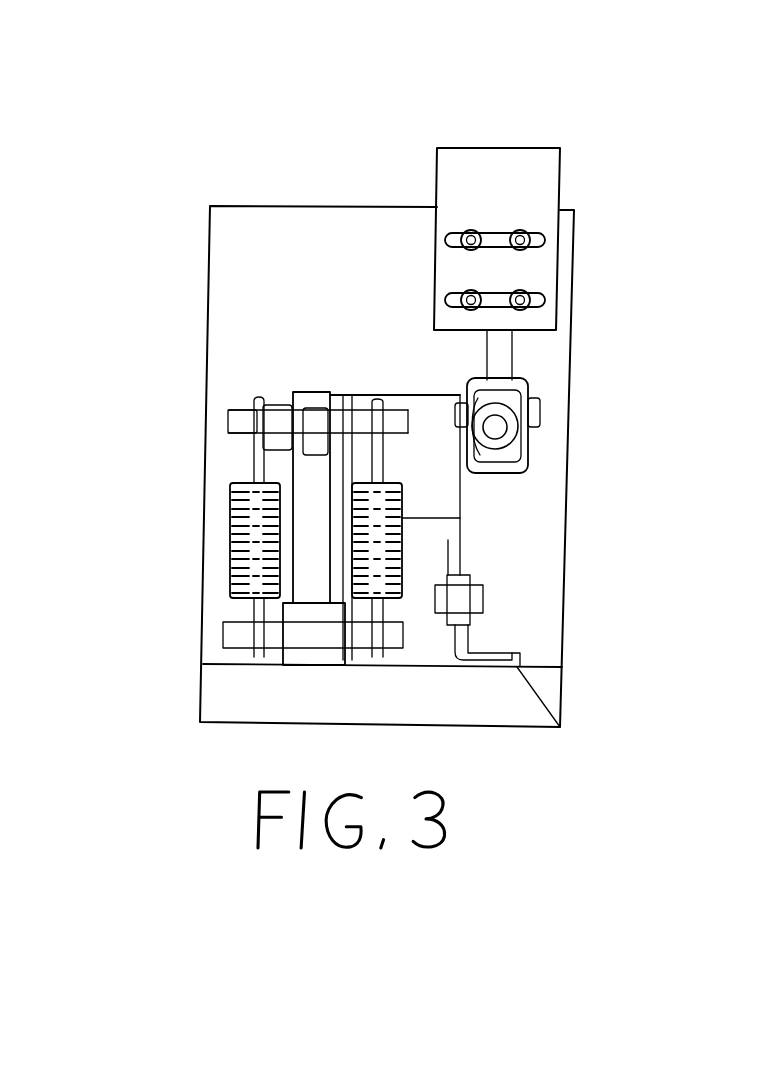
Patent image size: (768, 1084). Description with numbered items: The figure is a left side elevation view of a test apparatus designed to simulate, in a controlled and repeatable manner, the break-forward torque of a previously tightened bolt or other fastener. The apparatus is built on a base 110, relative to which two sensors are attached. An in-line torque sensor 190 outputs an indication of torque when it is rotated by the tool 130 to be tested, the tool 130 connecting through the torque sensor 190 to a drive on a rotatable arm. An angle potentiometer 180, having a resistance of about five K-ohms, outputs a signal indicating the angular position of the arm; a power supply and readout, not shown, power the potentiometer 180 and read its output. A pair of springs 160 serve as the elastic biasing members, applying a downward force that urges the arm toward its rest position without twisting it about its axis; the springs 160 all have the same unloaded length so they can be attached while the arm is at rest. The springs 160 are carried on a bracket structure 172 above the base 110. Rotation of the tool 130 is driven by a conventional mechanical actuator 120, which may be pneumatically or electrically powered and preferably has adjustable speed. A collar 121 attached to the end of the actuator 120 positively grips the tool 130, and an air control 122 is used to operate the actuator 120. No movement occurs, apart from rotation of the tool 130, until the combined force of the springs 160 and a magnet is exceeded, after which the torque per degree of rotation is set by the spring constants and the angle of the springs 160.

The base 110 is at (660, 682).
The mechanical actuator 120 is at (592, 87).
The collar 121 is at (632, 385).
The air control 122 is at (593, 167).
The tool to be tested 130 is at (618, 468).
The springs 160 is at (232, 525).
The bracket 172 is at (302, 603).
The angle potentiometer 180 is at (218, 112).
The in-line torque sensor 190 is at (423, 394).